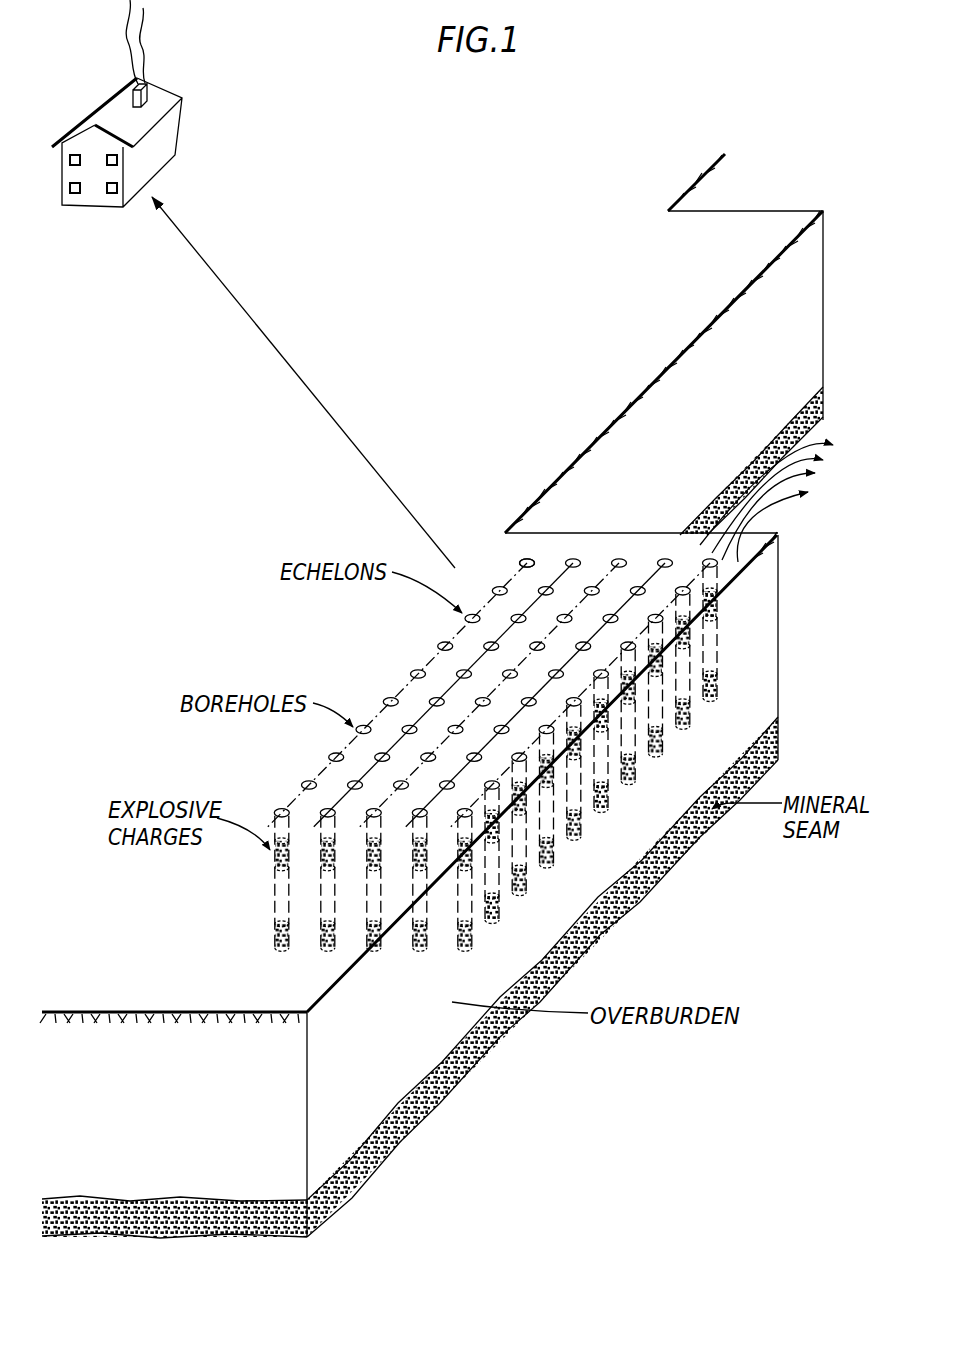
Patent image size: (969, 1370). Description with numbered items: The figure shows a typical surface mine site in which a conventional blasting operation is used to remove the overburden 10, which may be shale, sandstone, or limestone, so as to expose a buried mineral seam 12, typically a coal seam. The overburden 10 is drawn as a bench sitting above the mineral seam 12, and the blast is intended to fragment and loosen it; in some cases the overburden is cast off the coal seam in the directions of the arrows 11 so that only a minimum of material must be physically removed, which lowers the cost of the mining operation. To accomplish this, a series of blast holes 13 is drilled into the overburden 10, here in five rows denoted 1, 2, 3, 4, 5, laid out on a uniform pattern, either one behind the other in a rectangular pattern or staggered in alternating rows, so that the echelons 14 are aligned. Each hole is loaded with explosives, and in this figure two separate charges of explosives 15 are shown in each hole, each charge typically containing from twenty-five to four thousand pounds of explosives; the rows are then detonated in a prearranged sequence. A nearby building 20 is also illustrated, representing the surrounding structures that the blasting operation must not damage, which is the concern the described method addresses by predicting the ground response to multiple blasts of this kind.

The overburden 10 is at (720, 415).
The arrows 11 is at (795, 493).
The mineral seam 12 is at (643, 878).
The blast holes 13 is at (515, 558).
The echelons 14 is at (499, 681).
The charges of explosives 15 is at (321, 930).
The surrounding buildings 20 is at (165, 138).
The row of blast holes 1 is at (591, 681).
The row of blast holes 2 is at (543, 681).
The row of blast holes 3 is at (496, 681).
The row of blast holes 4 is at (449, 681).
The row of blast holes 5 is at (403, 681).